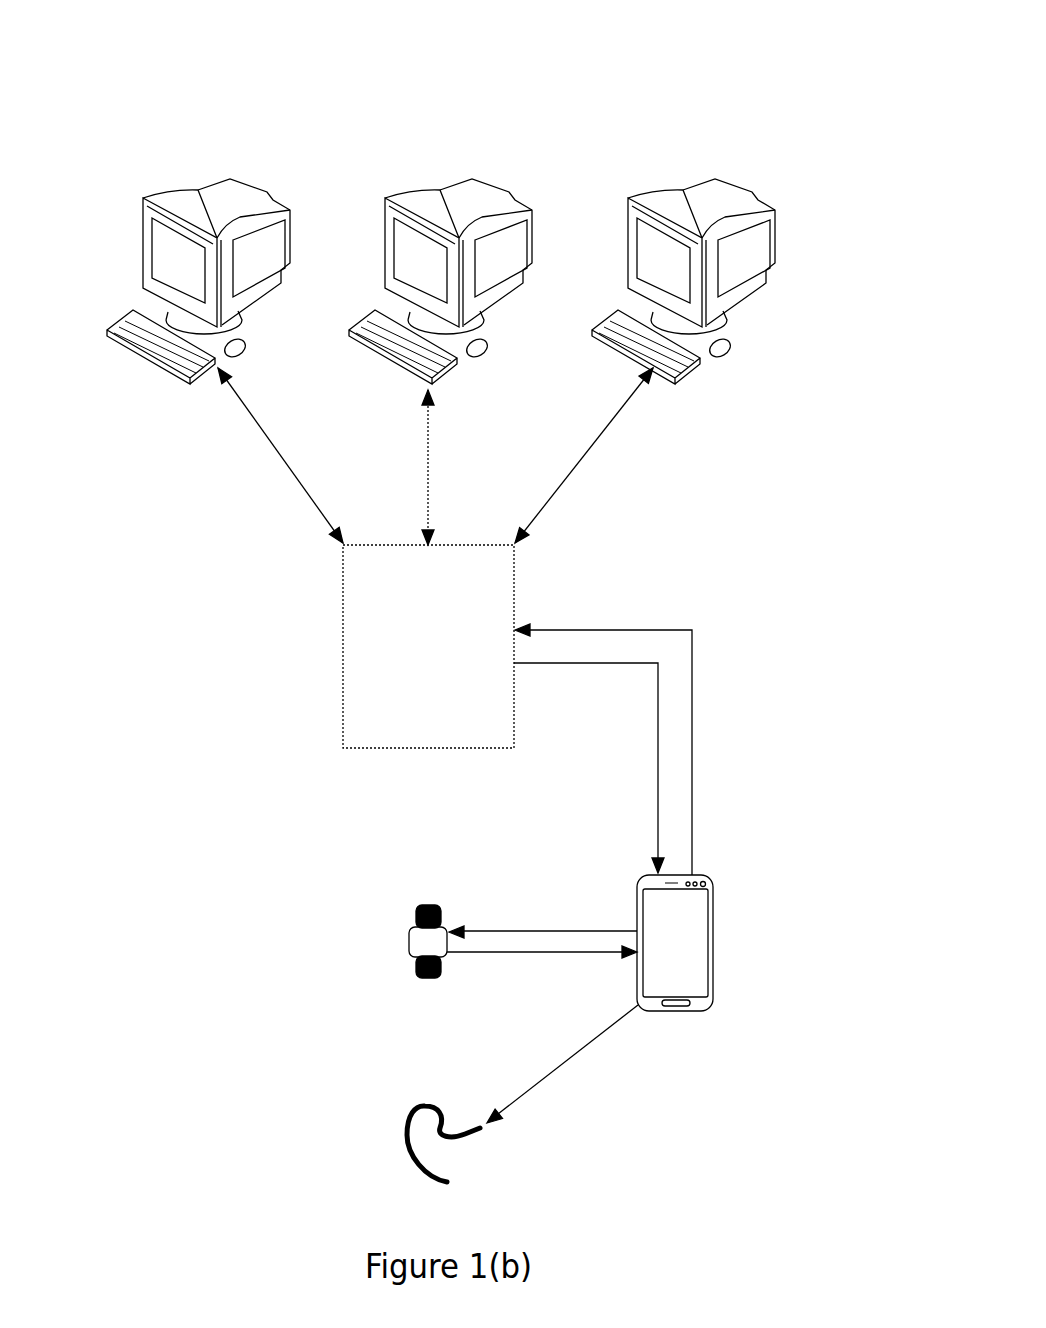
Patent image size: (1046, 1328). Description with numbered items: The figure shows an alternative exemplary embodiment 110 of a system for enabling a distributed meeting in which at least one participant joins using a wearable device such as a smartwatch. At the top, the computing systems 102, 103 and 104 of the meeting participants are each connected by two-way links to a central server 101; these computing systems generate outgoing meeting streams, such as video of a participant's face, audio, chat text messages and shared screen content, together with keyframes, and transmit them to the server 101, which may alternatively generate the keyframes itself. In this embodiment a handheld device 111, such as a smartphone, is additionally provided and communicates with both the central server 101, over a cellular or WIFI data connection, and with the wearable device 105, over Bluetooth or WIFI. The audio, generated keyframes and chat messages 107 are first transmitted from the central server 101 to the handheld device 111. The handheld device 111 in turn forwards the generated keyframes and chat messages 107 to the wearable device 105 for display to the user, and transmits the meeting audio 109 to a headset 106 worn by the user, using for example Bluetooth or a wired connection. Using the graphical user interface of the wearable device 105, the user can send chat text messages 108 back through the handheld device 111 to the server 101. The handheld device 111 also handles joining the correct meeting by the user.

The central server 101 is at (343, 652).
The computing system 102 is at (207, 183).
The computing system 103 is at (448, 183).
The computing system 104 is at (704, 183).
The wearable device 105 is at (409, 942).
The headset 106 is at (403, 1140).
The audio, generated keyframes and chat messages 107 is at (658, 795).
The chat text messages 108 is at (693, 745).
The meeting audio 109 is at (568, 1060).
The alternative exemplary embodiment 110 is at (617, 85).
The handheld device 111 is at (678, 1013).